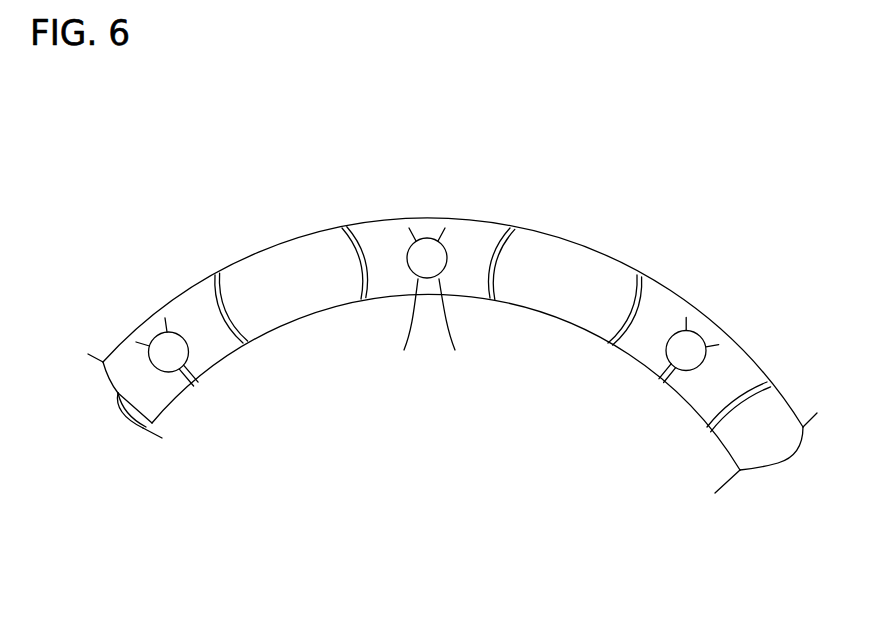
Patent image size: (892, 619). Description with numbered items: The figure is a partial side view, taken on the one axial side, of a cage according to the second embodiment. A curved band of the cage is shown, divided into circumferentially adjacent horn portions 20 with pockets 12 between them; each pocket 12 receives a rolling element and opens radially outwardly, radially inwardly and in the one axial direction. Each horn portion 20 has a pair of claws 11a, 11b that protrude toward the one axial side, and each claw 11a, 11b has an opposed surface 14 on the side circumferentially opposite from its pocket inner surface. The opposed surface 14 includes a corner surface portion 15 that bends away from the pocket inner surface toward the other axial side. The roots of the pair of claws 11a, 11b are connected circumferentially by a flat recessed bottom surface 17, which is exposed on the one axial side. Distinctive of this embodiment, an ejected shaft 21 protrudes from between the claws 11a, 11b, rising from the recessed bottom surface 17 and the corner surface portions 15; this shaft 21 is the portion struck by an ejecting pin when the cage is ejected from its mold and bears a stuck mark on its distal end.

The horn portion 20 is at (725, 289).
The pocket 12 is at (290, 283).
The opposed surface 14 is at (372, 240).
The recessed bottom surface 17 is at (425, 232).
The corner surface portion 15 is at (429, 330).
The ejected shaft 21 is at (167, 350).
The claw 11a is at (497, 267).
The claw 11b is at (360, 270).